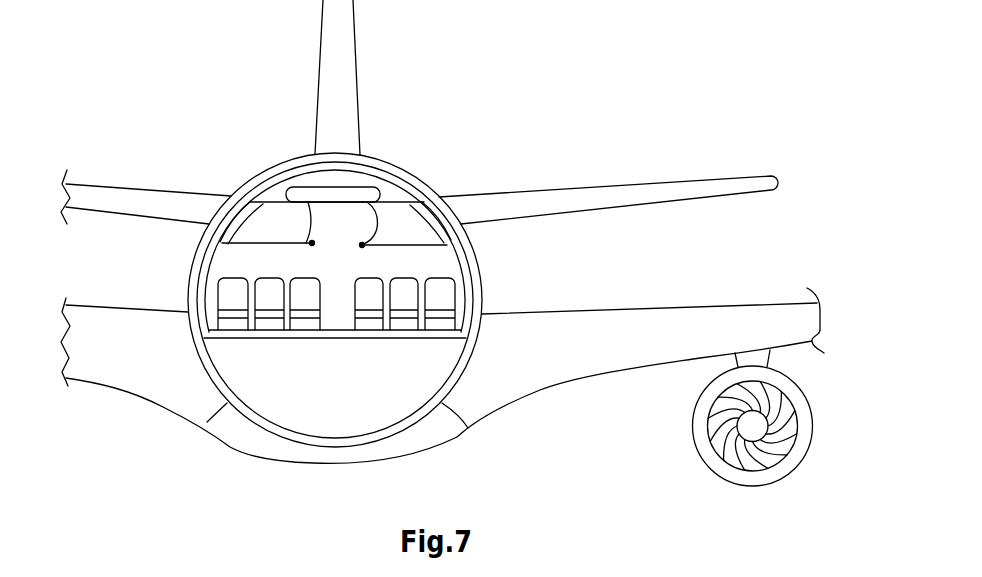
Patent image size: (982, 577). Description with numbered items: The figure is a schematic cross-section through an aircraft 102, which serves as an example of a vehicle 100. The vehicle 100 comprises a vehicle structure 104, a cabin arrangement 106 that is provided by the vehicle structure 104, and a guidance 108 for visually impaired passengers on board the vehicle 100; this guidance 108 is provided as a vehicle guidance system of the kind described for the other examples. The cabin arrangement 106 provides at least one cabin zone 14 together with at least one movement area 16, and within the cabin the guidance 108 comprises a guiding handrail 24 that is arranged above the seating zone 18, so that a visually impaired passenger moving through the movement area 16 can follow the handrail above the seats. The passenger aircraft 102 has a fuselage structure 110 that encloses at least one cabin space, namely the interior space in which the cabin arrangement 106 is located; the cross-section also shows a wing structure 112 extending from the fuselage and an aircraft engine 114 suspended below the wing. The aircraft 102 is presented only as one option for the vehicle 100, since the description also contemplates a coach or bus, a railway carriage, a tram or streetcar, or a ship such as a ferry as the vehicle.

The vehicle 100 is at (474, 103).
The aircraft 102 is at (273, 152).
The vehicle structure 104 is at (494, 263).
The cabin arrangement 106 is at (346, 232).
The guidance 108 is at (237, 260).
The fuselage structure 110 is at (227, 403).
The wing structure 112 is at (668, 313).
The aircraft engine 114 is at (692, 432).
The cabin zone 14 is at (415, 204).
The movement area 16 is at (348, 301).
The seating zone 18 is at (404, 273).
The guiding handrail 24 is at (308, 262).